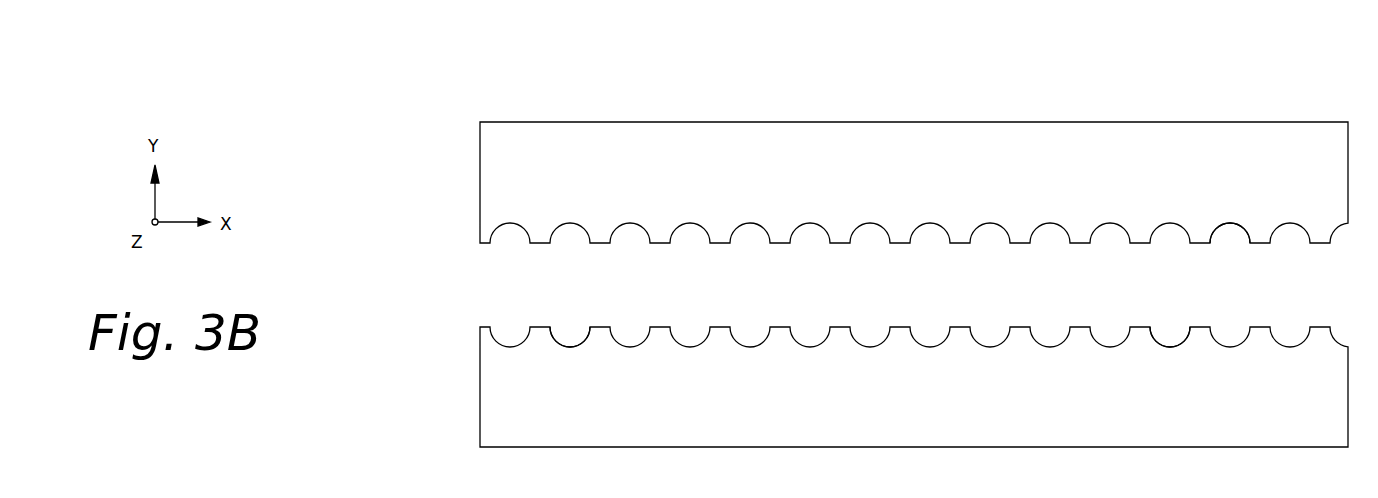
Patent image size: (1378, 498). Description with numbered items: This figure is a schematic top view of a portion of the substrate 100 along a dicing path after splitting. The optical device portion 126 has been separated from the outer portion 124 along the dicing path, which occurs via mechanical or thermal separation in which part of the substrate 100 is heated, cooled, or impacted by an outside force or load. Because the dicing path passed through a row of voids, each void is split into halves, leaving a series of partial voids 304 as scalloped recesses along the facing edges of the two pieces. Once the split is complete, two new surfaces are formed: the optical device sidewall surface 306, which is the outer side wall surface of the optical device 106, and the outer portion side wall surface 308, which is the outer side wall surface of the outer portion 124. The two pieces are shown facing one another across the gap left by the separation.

The substrate 100 is at (881, 247).
The optical device 106 is at (881, 370).
The outer portion 124 is at (906, 181).
The optical device portion 126 is at (906, 406).
The partial void 304 is at (567, 347).
The optical device sidewall surface 306 is at (1198, 327).
The outer portion side wall surface 308 is at (1205, 243).